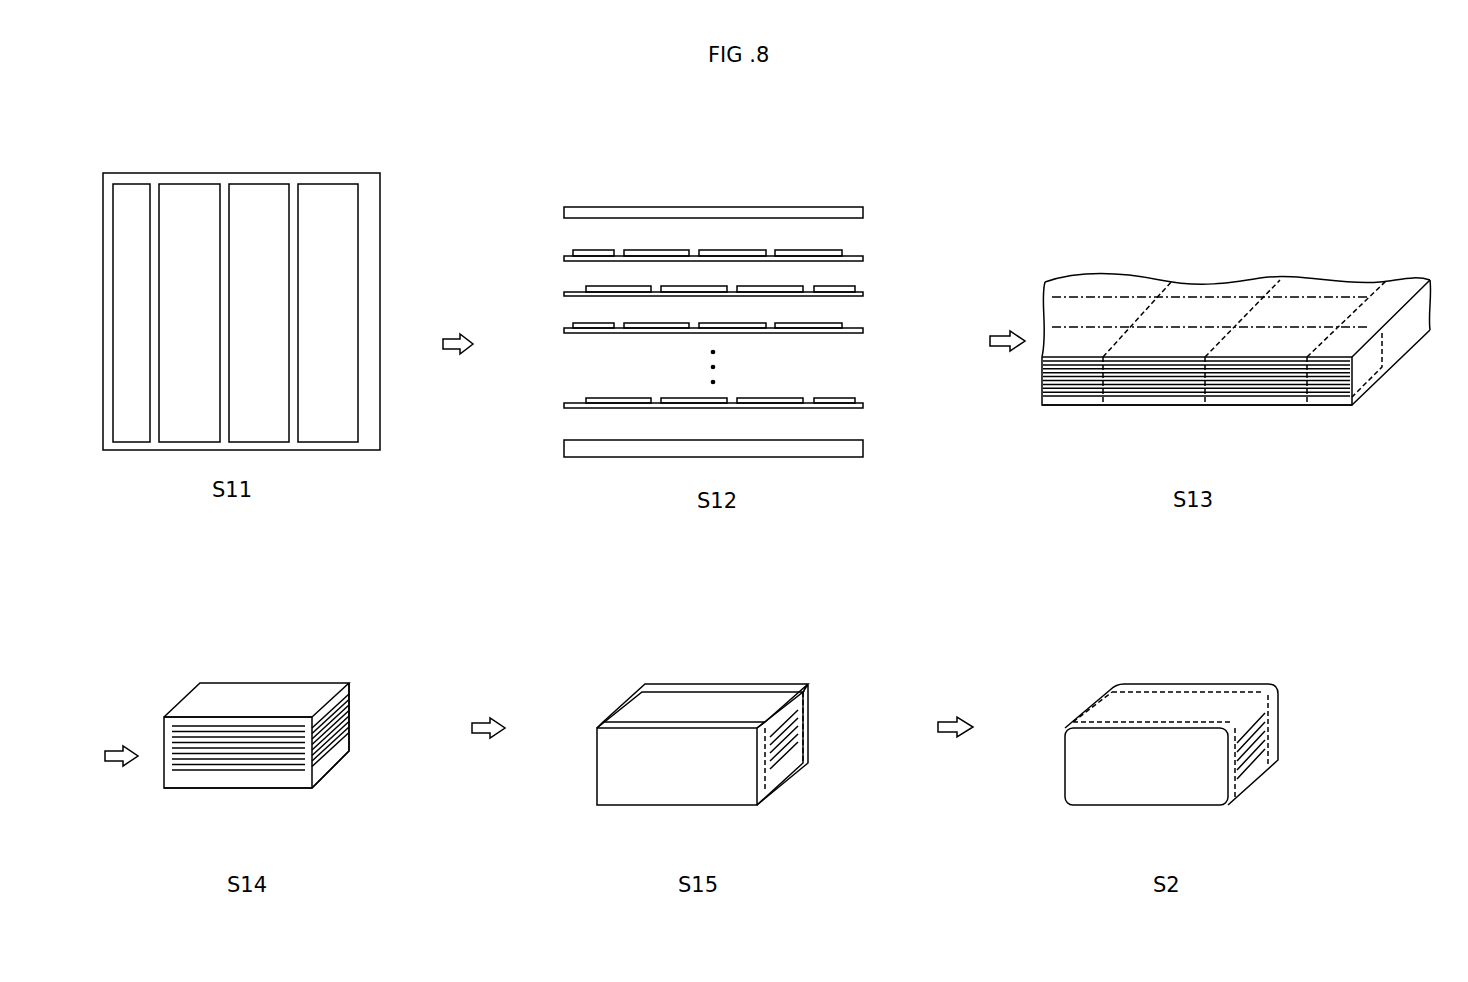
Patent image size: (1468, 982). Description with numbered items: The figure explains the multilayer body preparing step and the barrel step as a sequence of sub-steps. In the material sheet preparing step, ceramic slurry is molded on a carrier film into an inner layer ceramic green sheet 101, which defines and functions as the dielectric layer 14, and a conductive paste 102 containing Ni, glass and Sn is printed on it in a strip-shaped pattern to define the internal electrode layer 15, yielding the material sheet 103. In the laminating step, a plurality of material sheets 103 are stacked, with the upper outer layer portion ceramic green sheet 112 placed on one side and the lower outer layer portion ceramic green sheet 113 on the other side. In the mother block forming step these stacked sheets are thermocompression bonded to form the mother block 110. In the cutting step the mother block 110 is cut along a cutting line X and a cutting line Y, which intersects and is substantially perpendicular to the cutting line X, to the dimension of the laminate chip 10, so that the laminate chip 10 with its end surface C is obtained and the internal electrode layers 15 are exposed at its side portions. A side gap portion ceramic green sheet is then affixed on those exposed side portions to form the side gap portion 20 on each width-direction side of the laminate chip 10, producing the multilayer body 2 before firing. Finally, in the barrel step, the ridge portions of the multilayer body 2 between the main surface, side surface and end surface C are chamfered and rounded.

The multilayer body 2 is at (717, 653).
The laminate chip 10 is at (290, 690).
The dielectric layer 14 is at (367, 183).
The internal electrode layer 15 is at (303, 770).
The side gap portion 20 is at (625, 727).
The inner layer ceramic green sheet 101 is at (814, 329).
The conductive paste 102 is at (340, 210).
The material sheet 103 is at (308, 160).
The mother block 110 is at (1202, 305).
The upper outer layer portion ceramic green sheet 112 is at (858, 206).
The lower outer layer portion ceramic green sheet 113 is at (859, 438).
The end surface C is at (337, 757).
The cutting line X is at (1378, 293).
The cutting line Y is at (1313, 297).